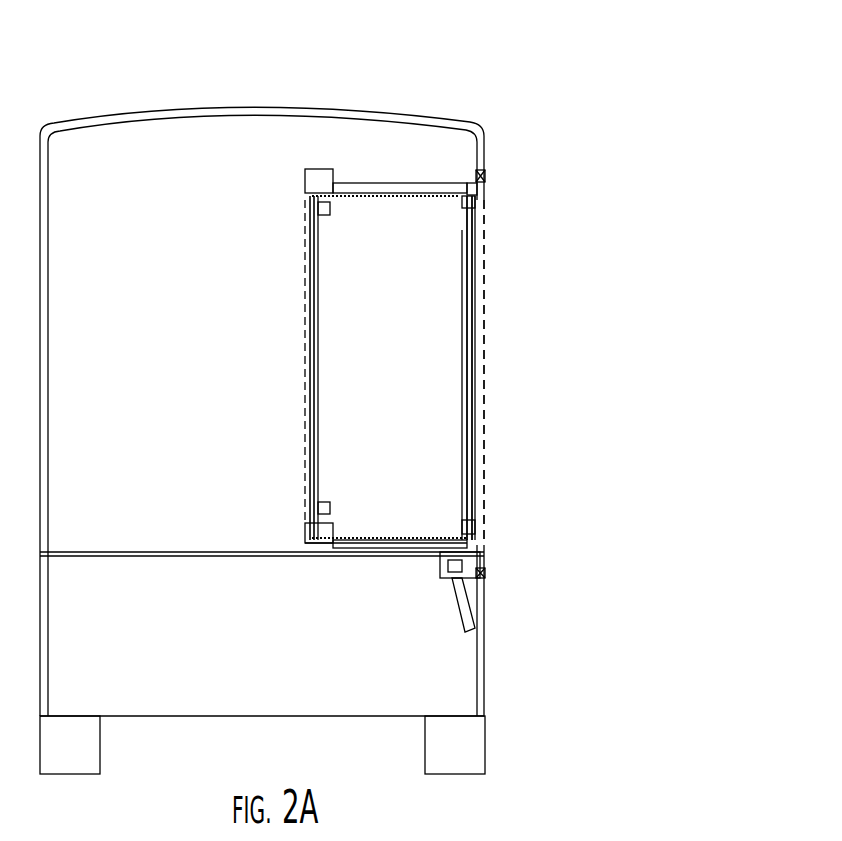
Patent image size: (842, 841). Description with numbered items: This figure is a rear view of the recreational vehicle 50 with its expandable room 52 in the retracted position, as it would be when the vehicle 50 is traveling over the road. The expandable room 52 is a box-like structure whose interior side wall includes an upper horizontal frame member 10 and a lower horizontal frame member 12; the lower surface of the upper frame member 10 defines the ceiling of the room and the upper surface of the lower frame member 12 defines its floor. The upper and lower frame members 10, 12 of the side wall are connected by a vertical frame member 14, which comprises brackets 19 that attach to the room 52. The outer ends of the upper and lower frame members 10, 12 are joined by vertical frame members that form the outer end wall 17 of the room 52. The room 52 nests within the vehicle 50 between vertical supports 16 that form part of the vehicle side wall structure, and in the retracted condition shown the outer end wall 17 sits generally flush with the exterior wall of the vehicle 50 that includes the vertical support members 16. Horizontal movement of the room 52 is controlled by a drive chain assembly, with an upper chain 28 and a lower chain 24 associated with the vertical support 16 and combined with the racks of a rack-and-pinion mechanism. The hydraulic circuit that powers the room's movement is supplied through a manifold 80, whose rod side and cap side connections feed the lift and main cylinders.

The recreational vehicle 50 is at (390, 62).
The upper horizontal frame member 10 is at (423, 183).
The lower horizontal frame member 12 is at (328, 548).
The vertical frame member 14 is at (316, 386).
The vertical supports 16 is at (472, 251).
The outer end wall 17 is at (484, 330).
The brackets 19 is at (308, 212).
The lower chain 24 is at (415, 545).
The upper chain 28 is at (352, 190).
The expandable room 52 is at (405, 339).
The manifold 80 is at (264, 552).